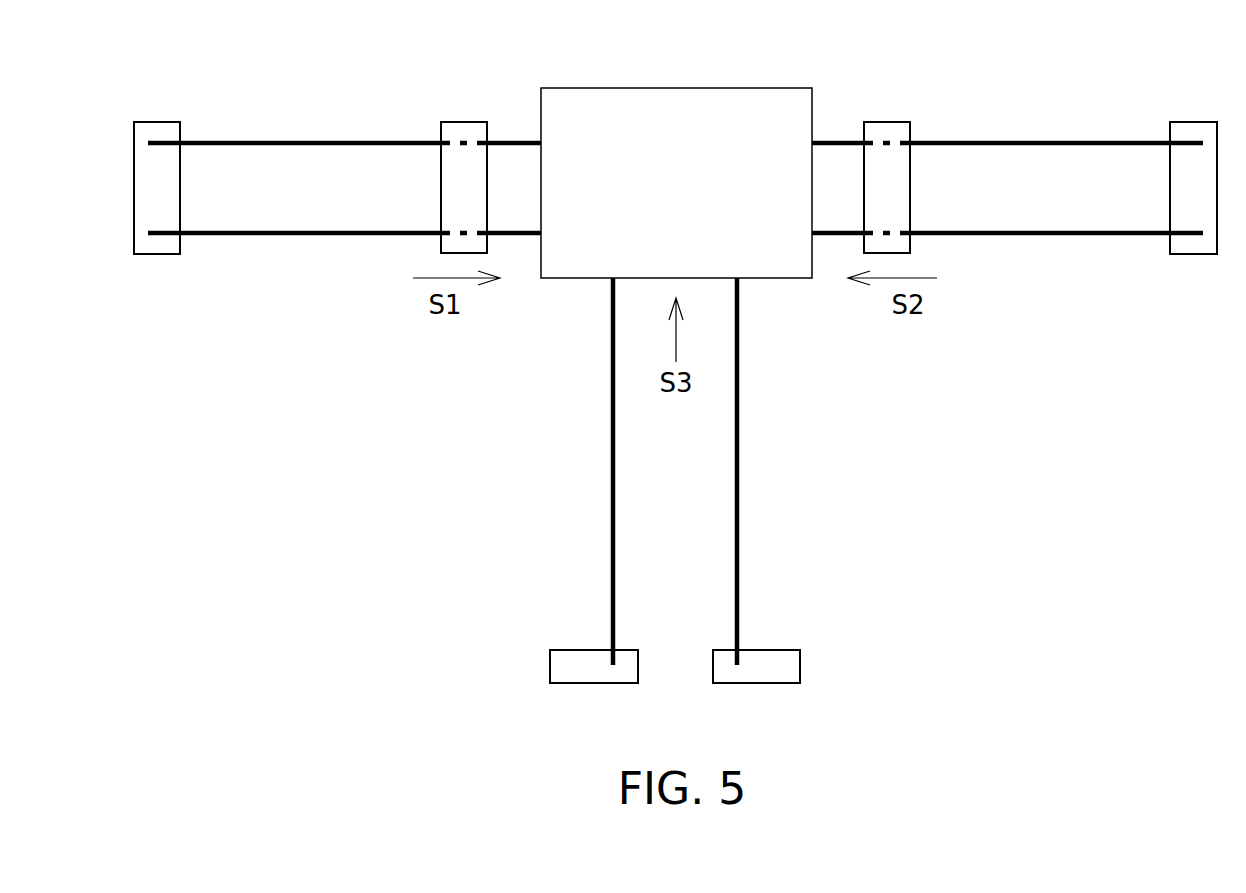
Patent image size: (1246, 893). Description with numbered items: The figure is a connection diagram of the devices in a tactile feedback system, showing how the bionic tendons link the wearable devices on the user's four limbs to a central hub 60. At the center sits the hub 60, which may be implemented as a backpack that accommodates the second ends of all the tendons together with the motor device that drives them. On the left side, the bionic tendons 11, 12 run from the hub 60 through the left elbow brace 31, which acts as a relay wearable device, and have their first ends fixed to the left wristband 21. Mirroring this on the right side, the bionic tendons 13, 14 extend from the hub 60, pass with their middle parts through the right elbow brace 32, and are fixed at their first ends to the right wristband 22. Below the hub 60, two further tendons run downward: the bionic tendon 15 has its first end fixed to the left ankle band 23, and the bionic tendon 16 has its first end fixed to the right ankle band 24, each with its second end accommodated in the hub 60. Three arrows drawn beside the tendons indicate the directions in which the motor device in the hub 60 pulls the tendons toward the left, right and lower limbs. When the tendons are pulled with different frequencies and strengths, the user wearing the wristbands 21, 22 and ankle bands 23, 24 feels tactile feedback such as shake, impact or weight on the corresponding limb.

The bionic tendon 11 is at (318, 141).
The bionic tendon 12 is at (318, 236).
The bionic tendon 13 is at (1026, 141).
The bionic tendon 14 is at (1026, 236).
The bionic tendon 15 is at (610, 475).
The bionic tendon 16 is at (740, 475).
The left wristband 21 is at (158, 122).
The right wristband 22 is at (1195, 122).
The left ankle band 23 is at (553, 668).
The right ankle band 24 is at (795, 668).
The left elbow brace 31 is at (465, 122).
The right elbow brace 32 is at (888, 122).
The hub 60 is at (690, 198).